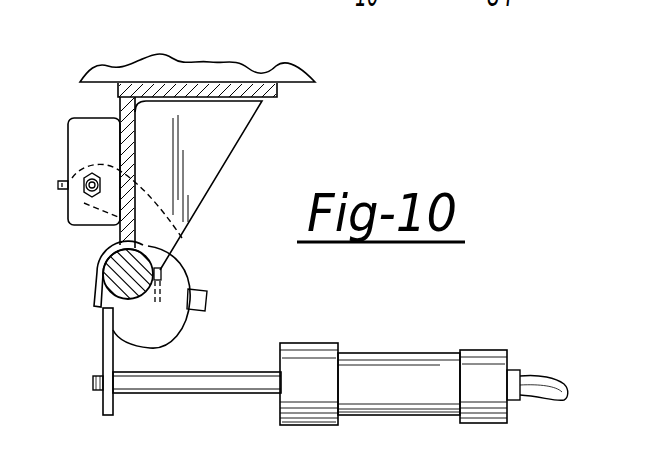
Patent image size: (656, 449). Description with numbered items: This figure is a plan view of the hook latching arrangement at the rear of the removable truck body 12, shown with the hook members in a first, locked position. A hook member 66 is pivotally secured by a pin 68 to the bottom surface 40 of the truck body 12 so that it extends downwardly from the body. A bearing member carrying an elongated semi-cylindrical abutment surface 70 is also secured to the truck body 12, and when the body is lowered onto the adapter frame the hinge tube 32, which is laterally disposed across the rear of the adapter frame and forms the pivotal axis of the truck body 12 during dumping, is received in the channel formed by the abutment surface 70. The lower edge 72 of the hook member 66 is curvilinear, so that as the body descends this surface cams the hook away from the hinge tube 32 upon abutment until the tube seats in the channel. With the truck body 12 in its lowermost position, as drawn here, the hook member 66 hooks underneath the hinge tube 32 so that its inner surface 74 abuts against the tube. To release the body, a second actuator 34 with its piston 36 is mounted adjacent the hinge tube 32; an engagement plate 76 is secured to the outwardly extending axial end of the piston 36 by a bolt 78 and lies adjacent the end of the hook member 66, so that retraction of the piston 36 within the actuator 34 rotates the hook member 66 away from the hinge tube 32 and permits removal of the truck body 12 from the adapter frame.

The truck body 12 is at (197, 72).
The bottom surface 40 is at (285, 89).
The pin 68 is at (80, 193).
The hinge tube 32 is at (98, 308).
The semi-cylindrical abutment surface 70 is at (117, 276).
The hook member 66 is at (165, 266).
The inner surface 74 is at (160, 277).
The lower edge 72 is at (172, 346).
The engagement plate 76 is at (104, 341).
The bolt 78 is at (95, 386).
The piston 36 is at (204, 386).
The second actuator 34 is at (428, 318).